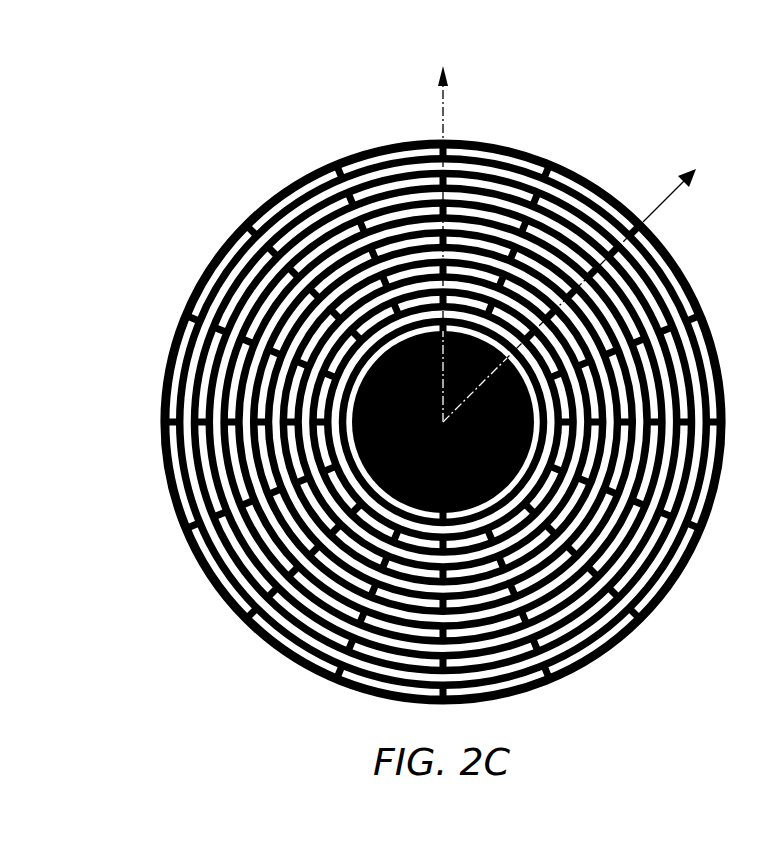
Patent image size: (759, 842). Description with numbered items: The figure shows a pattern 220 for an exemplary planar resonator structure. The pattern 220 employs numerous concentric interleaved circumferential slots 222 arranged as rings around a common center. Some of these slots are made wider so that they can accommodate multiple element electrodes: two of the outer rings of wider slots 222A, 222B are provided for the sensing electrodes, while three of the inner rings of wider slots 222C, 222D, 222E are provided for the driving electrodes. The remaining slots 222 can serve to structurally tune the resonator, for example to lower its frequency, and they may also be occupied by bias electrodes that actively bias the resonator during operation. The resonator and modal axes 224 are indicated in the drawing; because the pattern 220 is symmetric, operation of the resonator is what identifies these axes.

The pattern 220 is at (151, 88).
The concentric interleaved circumferential slots 222 is at (140, 410).
The wider slot 222A is at (382, 177).
The wider slot 222B is at (357, 162).
The wider slot 222C is at (332, 322).
The wider slot 222D is at (312, 362).
The wider slot 222E is at (295, 398).
The resonator and modal axes 224 is at (673, 188).